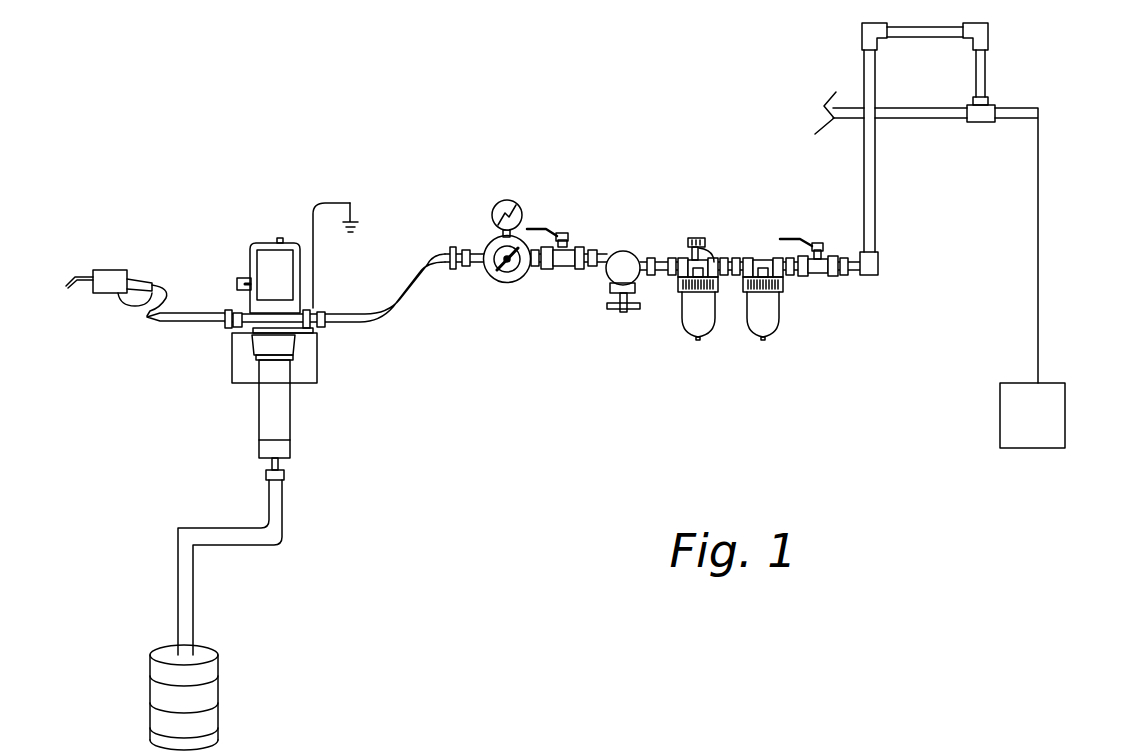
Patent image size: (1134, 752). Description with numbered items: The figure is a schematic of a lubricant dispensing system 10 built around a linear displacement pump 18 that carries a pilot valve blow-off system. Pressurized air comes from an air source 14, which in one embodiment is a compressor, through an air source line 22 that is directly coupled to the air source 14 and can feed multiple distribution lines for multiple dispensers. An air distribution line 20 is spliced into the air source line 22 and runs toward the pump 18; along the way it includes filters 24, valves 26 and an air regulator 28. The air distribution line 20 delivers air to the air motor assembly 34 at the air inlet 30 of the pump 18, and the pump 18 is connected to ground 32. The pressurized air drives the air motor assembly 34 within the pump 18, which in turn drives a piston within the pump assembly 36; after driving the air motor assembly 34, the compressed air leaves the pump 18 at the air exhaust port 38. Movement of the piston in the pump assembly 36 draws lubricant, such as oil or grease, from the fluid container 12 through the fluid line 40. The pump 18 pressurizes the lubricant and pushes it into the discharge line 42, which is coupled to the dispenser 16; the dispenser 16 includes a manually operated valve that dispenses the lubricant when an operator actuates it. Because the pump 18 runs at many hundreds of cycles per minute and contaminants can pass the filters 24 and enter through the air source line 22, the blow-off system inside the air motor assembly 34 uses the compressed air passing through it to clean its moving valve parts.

The lubricant dispensing system 10 is at (490, 148).
The fluid container 12 is at (212, 689).
The air source 14 is at (1044, 425).
The dispenser 16 is at (128, 255).
The linear displacement pump 18 is at (243, 227).
The air distribution line 20 is at (875, 172).
The air source line 22 is at (1038, 193).
The filters 24 is at (748, 350).
The valves 26 is at (813, 245).
The air regulator 28 is at (507, 283).
The air inlet 30 is at (335, 326).
The ground 32 is at (350, 203).
The air motor assembly 34 is at (278, 268).
The pump assembly 36 is at (266, 430).
The air exhaust port 38 is at (237, 284).
The fluid line 40 is at (232, 530).
The discharge line 42 is at (177, 325).